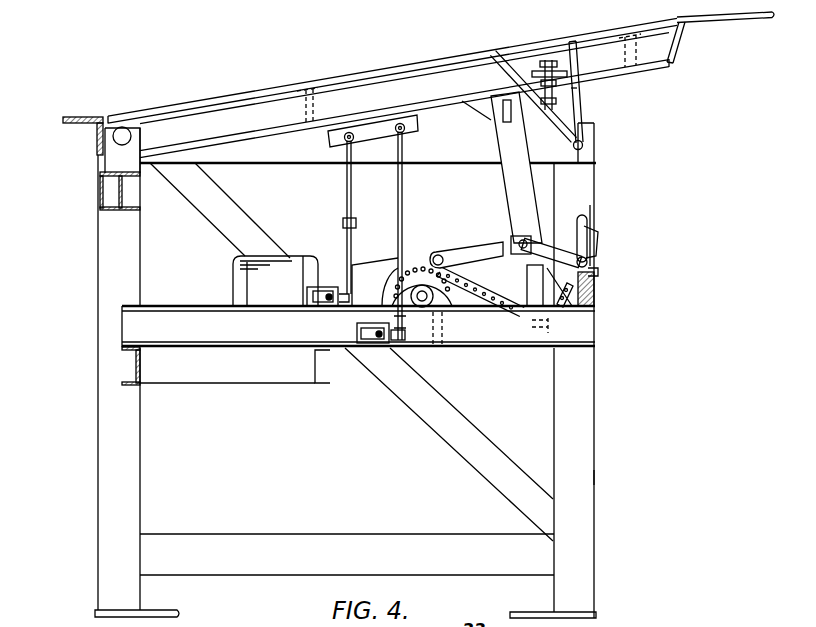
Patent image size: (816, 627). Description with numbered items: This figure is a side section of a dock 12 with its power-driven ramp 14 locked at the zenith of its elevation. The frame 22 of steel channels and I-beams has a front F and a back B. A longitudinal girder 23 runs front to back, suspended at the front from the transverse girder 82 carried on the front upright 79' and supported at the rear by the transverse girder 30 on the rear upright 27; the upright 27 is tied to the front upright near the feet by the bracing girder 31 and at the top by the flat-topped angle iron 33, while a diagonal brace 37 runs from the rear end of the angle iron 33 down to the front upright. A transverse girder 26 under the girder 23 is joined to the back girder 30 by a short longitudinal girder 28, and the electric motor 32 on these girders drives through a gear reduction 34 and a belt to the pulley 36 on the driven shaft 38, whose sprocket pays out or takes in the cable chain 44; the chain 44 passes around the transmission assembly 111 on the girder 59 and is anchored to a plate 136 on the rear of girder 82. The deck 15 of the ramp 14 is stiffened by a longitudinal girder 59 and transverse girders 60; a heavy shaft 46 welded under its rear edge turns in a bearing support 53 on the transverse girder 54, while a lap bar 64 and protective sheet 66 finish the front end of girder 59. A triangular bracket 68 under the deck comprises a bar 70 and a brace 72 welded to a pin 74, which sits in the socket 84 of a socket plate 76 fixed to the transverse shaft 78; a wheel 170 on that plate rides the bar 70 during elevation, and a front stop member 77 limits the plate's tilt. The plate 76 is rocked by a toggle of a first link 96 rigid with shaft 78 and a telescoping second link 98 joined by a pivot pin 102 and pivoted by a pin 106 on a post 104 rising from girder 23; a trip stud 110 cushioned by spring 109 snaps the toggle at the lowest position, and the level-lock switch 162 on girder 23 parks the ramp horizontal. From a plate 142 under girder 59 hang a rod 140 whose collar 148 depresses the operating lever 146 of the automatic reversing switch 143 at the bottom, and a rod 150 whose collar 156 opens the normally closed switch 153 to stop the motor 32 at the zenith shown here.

The dock 12 is at (686, 318).
The ramp 14 is at (410, 71).
The deck 15 is at (345, 87).
The frame 22 is at (86, 536).
The longitudinal girder 23 is at (592, 338).
The transverse girder 26 is at (320, 368).
The upright 27 is at (130, 480).
The short longitudinal girder 28 is at (258, 378).
The transverse girder 30 is at (134, 368).
The longitudinal bracing girder 31 is at (410, 548).
The electric motor 32 is at (246, 276).
The angle iron 33 is at (272, 164).
The gear reduction 34 is at (358, 262).
The pulley 36 is at (418, 258).
The diagonally-extending brace 37 is at (490, 442).
The driven shaft 38 is at (425, 301).
The cable chain 44 is at (487, 291).
The cylindrical shaft 46 is at (131, 134).
The bearing support 53 is at (113, 163).
The transverse girder 54 is at (118, 190).
The longitudinal girder 59 is at (666, 59).
The transverse girder 60 is at (313, 103).
The lap bar 64 is at (716, 22).
The protective sheet 66 is at (675, 46).
The triangular supporting bracket 68 is at (582, 93).
The front downwardly depending bar 70 is at (582, 112).
The brace 72 is at (517, 125).
The pin 74 is at (587, 147).
The socket plate 76 is at (598, 232).
The front stop member 77 is at (598, 256).
The shaft 78 is at (597, 272).
The upright 79' is at (593, 370).
The transverse girder 82 is at (595, 288).
The socket 84 is at (594, 218).
The first link 96 is at (528, 238).
The second link 98 is at (469, 250).
The pivot pin 102 is at (508, 238).
The post 104 is at (446, 322).
The pin 106 is at (437, 253).
The spring 109 is at (556, 104).
The trip stud 110 is at (523, 114).
The transmission assembly 111 is at (496, 147).
The plate 136 is at (578, 300).
The depending rod 140 is at (345, 200).
The plate 142 is at (326, 140).
The automatic reversing switch 143 is at (315, 300).
The operating lever 146 is at (333, 303).
The collar 148 is at (356, 222).
The depending rod 150 is at (396, 178).
The switch 153 is at (373, 341).
The collar 156 is at (401, 339).
The switch 162 is at (540, 312).
The wheel 170 is at (572, 225).
The back B is at (98, 393).
The front F is at (585, 477).